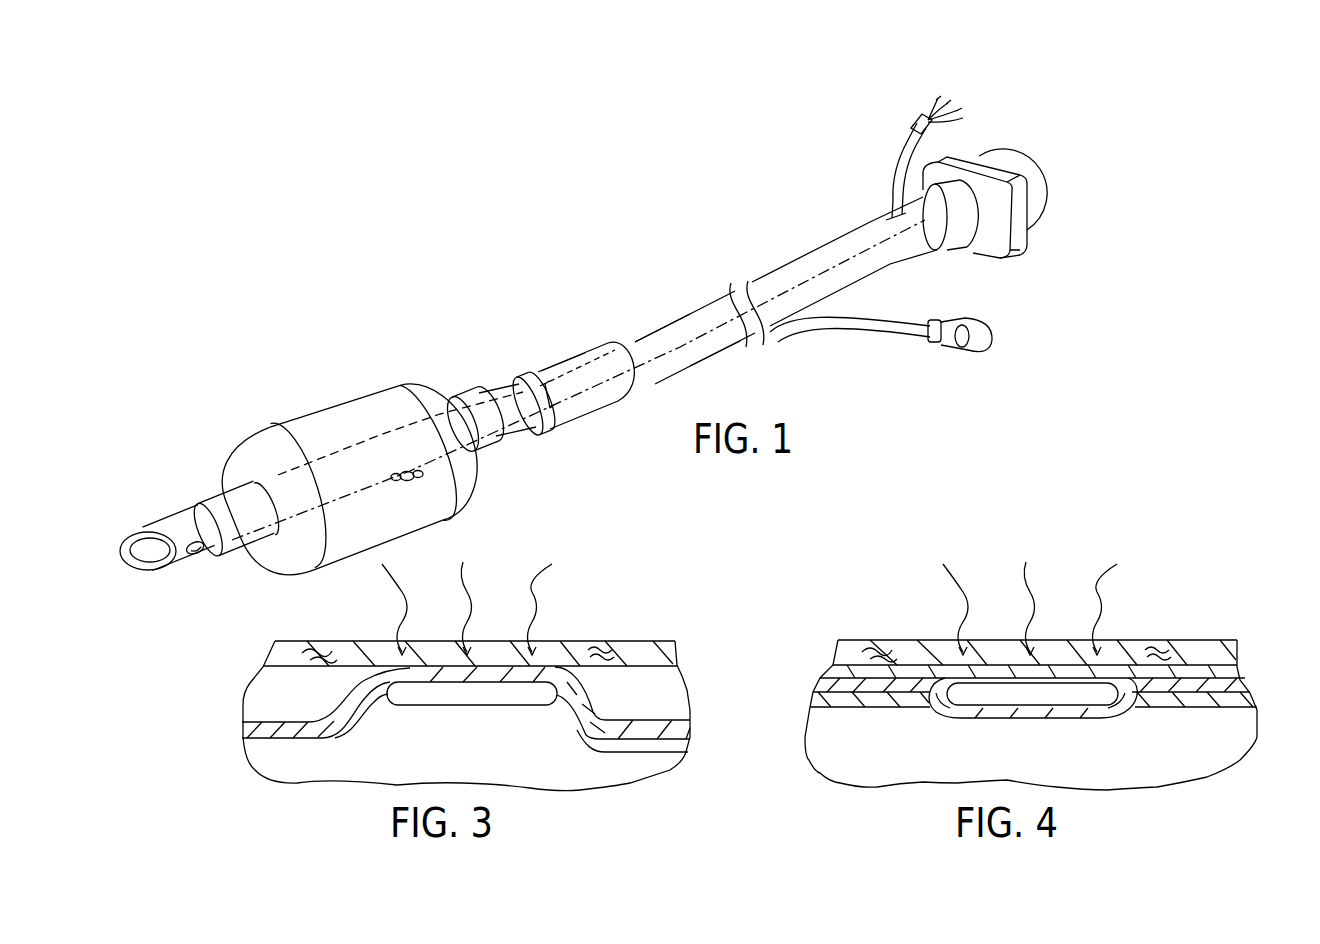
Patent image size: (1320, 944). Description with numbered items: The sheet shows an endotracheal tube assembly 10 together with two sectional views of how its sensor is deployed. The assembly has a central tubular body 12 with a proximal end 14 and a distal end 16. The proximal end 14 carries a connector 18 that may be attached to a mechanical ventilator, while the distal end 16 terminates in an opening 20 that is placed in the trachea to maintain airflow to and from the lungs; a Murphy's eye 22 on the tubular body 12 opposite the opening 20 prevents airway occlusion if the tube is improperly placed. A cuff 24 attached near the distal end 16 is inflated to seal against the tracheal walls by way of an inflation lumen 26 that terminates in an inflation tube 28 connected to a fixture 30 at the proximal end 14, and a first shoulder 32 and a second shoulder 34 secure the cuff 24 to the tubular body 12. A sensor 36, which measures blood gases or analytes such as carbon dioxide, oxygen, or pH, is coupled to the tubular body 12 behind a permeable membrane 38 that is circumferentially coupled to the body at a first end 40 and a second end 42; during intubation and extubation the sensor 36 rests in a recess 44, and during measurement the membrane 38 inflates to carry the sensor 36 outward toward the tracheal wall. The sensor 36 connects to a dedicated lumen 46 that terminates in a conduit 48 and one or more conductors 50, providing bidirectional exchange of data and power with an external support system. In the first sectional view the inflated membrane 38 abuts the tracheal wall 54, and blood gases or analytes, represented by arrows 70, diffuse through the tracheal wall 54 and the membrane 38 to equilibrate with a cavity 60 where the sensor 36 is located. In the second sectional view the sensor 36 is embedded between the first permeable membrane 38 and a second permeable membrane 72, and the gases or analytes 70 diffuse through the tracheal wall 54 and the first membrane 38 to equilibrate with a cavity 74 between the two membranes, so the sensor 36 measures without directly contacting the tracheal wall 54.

In FIG. 1, the endotracheal tube assembly 10 is at (556, 228).
In FIG. 1, the central tubular body 12 is at (670, 358).
In FIG. 1, the proximal end 14 is at (964, 266).
In FIG. 1, the distal end 16 is at (146, 524).
In FIG. 1, the connector 18 is at (1041, 186).
In FIG. 1, the opening 20 is at (149, 556).
In FIG. 1, the Murphy's eye 22 is at (199, 553).
In FIG. 1, the cuff 24 is at (318, 412).
In FIG. 1, the inflation lumen 26 is at (702, 372).
In FIG. 1, the inflation tube 28 is at (872, 322).
In FIG. 1, the fixture 30 is at (980, 355).
In FIG. 1, the first shoulder 32 is at (222, 492).
In FIG. 1, the second shoulder 34 is at (471, 411).
In FIG. 1, the sensor 36 is at (580, 364).
In FIG. 3, the sensor 36 is at (473, 699).
In FIG. 4, the sensor 36 is at (1037, 705).
In FIG. 1, the permeable membrane 38 is at (535, 379).
In FIG. 3, the permeable membrane 38 is at (683, 720).
In FIG. 4, the permeable membrane 38 is at (1238, 677).
In FIG. 1, the first end 40 is at (514, 384).
In FIG. 1, the second end 42 is at (608, 337).
In FIG. 1, the recess 44 is at (551, 429).
In FIG. 1, the dedicated lumen 46 is at (658, 327).
In FIG. 3, the dedicated lumen 46 is at (664, 753).
In FIG. 4, the dedicated lumen 46 is at (1133, 708).
In FIG. 1, the conduit 48 is at (890, 197).
In FIG. 1, the conductors 50 is at (950, 122).
In FIG. 3, the tracheal wall 54 is at (640, 647).
In FIG. 4, the tracheal wall 54 is at (1200, 647).
In FIG. 3, the cavity 60 is at (391, 727).
In FIG. 3, the blood gases and/or blood analytes 70 is at (390, 606).
In FIG. 4, the blood gases and/or blood analytes 70 is at (953, 606).
In FIG. 4, the second permeable membrane 72 is at (1205, 700).
In FIG. 4, the cavity 74 is at (934, 710).